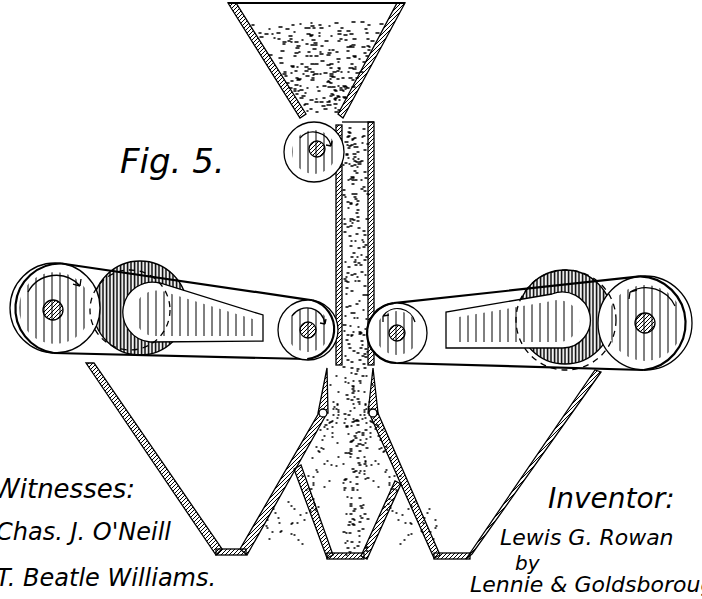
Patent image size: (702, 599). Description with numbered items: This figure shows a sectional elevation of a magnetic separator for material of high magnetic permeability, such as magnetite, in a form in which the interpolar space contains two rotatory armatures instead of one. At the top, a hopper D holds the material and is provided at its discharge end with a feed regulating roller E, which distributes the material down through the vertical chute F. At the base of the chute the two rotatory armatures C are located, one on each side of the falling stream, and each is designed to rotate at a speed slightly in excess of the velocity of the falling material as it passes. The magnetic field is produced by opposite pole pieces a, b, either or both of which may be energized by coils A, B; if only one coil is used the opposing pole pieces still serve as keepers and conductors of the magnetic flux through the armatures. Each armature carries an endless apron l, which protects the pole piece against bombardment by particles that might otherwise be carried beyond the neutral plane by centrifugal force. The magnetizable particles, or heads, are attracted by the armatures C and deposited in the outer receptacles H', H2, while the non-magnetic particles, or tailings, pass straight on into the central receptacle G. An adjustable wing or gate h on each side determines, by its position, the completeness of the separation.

The hopper D is at (258, 66).
The feed regulating roller E is at (289, 138).
The vertical chute F is at (351, 338).
The coil A is at (133, 262).
The coil B is at (553, 261).
The rotatory armature C is at (310, 300).
The endless apron l is at (353, 311).
The pole piece a is at (193, 312).
The pole piece b is at (518, 320).
The adjustable wing or gate h is at (316, 380).
The outer receptacle H' is at (206, 459).
The outer receptacle H2 is at (485, 464).
The central receptacle G is at (347, 505).